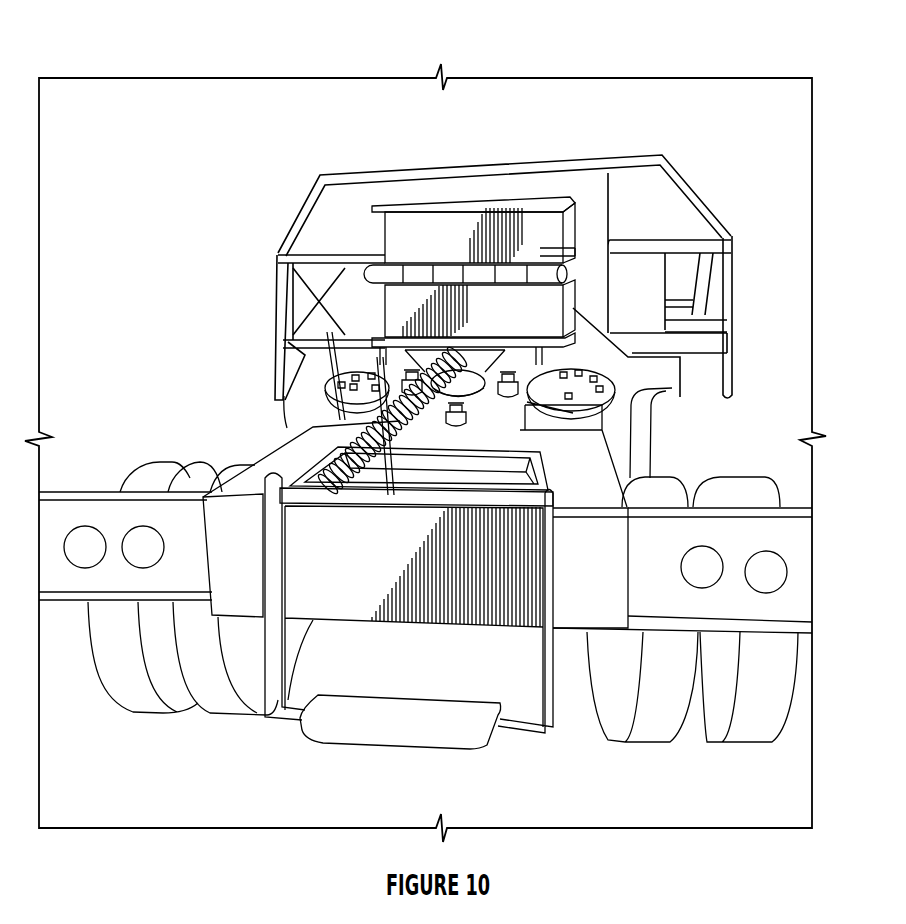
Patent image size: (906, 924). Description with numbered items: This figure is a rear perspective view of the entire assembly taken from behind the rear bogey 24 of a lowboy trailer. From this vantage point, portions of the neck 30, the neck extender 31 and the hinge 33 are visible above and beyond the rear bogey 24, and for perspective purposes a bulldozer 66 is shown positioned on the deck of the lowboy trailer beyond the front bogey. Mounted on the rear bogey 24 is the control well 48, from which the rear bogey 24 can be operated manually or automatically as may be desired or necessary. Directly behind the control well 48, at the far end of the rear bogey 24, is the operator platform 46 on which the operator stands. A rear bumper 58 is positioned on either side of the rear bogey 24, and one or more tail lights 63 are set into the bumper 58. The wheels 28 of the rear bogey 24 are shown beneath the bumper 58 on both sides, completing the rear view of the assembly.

The bulldozer 66 is at (634, 141).
The neck extender 31 is at (523, 234).
The hinge 33 is at (450, 273).
The neck 30 is at (505, 315).
The control well 48 is at (511, 482).
The operator platform 46 is at (385, 722).
The rear bogey 24 is at (585, 564).
The rear bumper 58 is at (56, 570).
The tail lights 63 is at (148, 553).
The wheels 28 is at (107, 650).